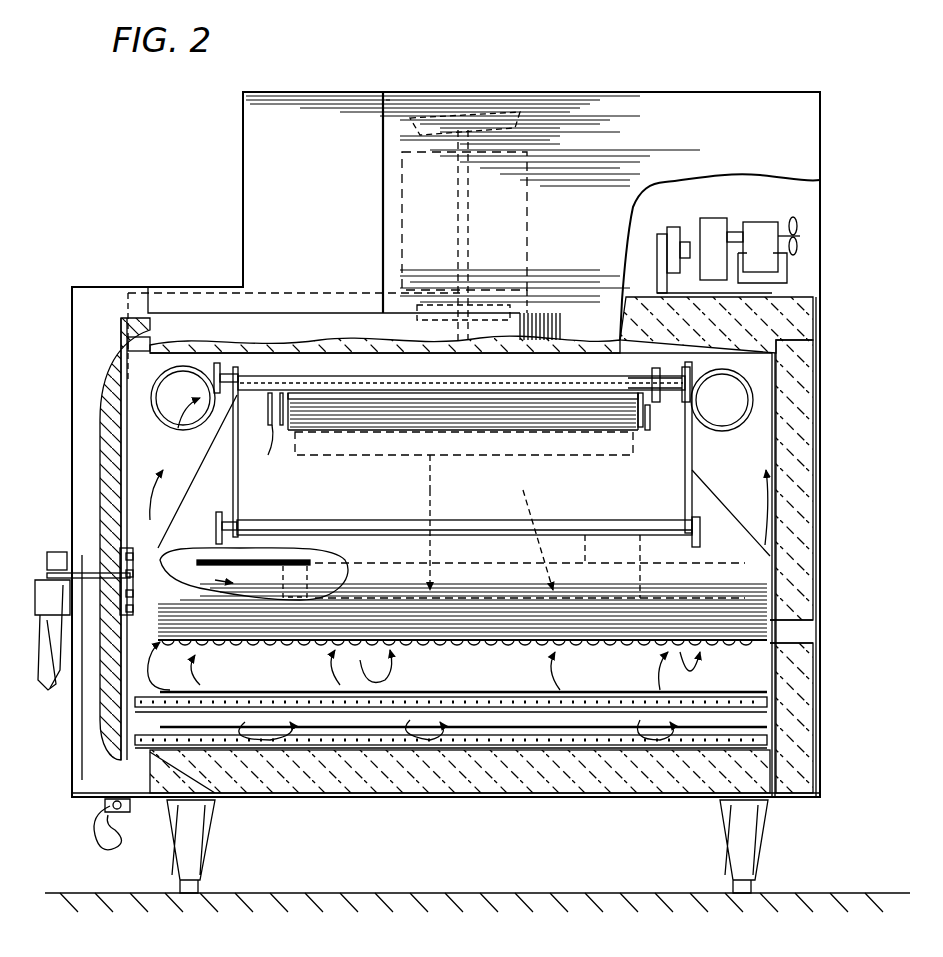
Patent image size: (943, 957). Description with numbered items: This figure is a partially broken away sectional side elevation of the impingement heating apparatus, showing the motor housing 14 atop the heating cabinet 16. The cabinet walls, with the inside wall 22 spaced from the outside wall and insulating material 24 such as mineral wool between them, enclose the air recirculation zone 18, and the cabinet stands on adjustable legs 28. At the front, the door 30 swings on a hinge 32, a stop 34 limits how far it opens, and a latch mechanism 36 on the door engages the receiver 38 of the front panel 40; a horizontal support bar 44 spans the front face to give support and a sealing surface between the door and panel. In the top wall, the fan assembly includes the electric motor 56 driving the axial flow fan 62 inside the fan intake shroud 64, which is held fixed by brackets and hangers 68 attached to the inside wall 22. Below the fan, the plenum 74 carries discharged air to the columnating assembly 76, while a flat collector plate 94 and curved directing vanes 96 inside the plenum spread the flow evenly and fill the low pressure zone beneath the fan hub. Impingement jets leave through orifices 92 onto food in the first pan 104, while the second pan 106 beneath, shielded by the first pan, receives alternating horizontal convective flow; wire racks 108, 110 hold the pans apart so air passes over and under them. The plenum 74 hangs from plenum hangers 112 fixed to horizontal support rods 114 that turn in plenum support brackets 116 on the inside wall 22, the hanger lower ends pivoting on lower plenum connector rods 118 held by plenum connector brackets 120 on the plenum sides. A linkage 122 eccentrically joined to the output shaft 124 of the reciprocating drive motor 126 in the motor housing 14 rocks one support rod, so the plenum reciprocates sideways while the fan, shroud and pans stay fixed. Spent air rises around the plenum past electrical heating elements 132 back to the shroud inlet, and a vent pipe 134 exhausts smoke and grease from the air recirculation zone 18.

The motor housing 14 is at (726, 90).
The heating cabinet 16 is at (520, 800).
The air recirculation zone 18 is at (133, 460).
The inside wall 22 is at (548, 290).
The insulating material 24 is at (622, 790).
The adjustable legs 28 is at (197, 848).
The door 30 is at (82, 737).
The hinge 32 is at (121, 812).
The stop 34 is at (107, 857).
The latch mechanism 36 is at (58, 690).
The receiver 38 is at (50, 552).
The front panel 40 is at (80, 405).
The horizontal support bar 44 is at (137, 556).
The electric motor 56 is at (523, 177).
The axial flow fan 62 is at (423, 458).
The fan intake shroud 64 is at (290, 440).
The hangers 68 is at (278, 424).
The plenum 74 is at (172, 522).
The columnating assembly 76 is at (706, 606).
The orifices 92 is at (203, 645).
The collector plate 94 is at (585, 520).
The curved directing vanes 96 is at (307, 580).
The first pan 104 is at (440, 690).
The second pan 106 is at (573, 727).
The wire rack 108 is at (407, 707).
The wire rack 110 is at (490, 740).
The plenum hangers 112 is at (233, 454).
The horizontal support rods 114 is at (288, 395).
The plenum support brackets 116 is at (222, 365).
The lower plenum connector rods 118 is at (226, 520).
The plenum connector brackets 120 is at (240, 530).
The linkage 122 is at (643, 203).
The output shaft 124 is at (693, 240).
The reciprocating drive motor 126 is at (708, 223).
The electrical heating elements 132 is at (148, 385).
The vent pipe 134 is at (792, 633).